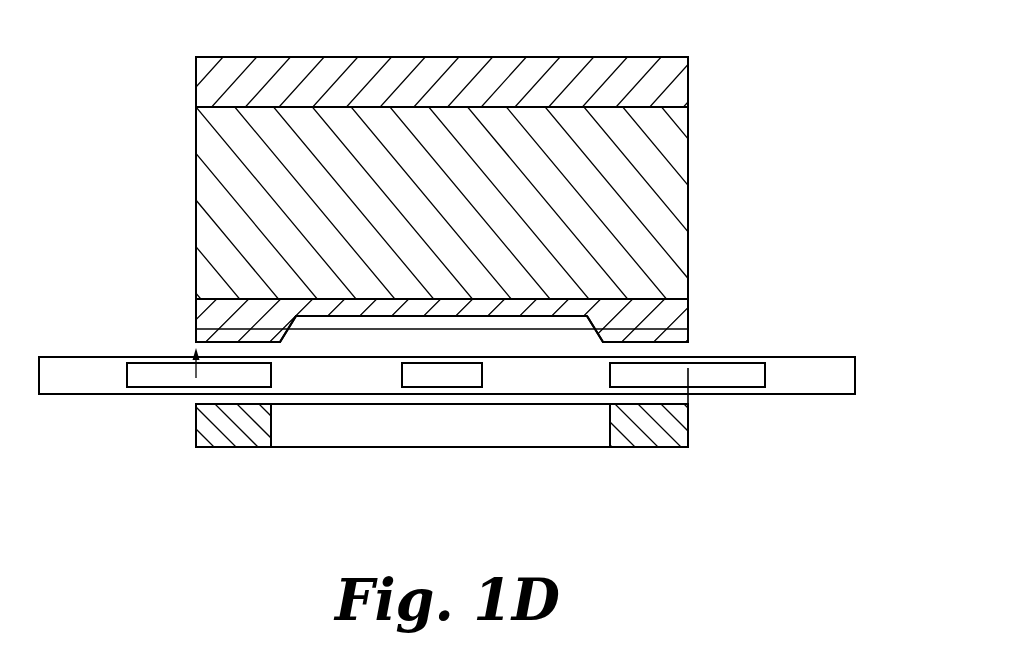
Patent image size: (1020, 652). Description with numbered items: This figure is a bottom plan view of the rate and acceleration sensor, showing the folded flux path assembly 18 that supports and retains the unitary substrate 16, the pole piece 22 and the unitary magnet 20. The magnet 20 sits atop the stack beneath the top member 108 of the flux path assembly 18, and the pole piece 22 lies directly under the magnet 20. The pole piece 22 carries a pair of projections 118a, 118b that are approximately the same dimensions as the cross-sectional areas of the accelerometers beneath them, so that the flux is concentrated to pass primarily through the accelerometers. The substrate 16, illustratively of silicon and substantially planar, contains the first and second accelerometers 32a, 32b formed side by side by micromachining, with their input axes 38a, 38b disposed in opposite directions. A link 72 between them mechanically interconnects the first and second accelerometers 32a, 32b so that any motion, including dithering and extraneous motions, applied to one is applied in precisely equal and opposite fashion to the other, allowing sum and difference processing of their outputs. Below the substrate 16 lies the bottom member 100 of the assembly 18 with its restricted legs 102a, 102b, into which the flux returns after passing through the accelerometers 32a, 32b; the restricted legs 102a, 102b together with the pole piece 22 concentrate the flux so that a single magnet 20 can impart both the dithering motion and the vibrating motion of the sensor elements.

The flux path assembly 18 is at (575, 57).
The top member 108 is at (680, 88).
The unitary magnet 20 is at (680, 192).
The pole piece 22 is at (680, 317).
The projection of pole piece 118a is at (240, 329).
The projection of pole piece 118b is at (653, 329).
The unitary substrate 16 is at (845, 368).
The first accelerometer 32a is at (223, 377).
The second accelerometer 32b is at (747, 372).
The link 72 is at (470, 387).
The input axis 38a is at (196, 377).
The input axis 38b is at (688, 378).
The bottom member 100 is at (440, 452).
The restricted leg 102a is at (235, 437).
The restricted leg 102b is at (660, 443).